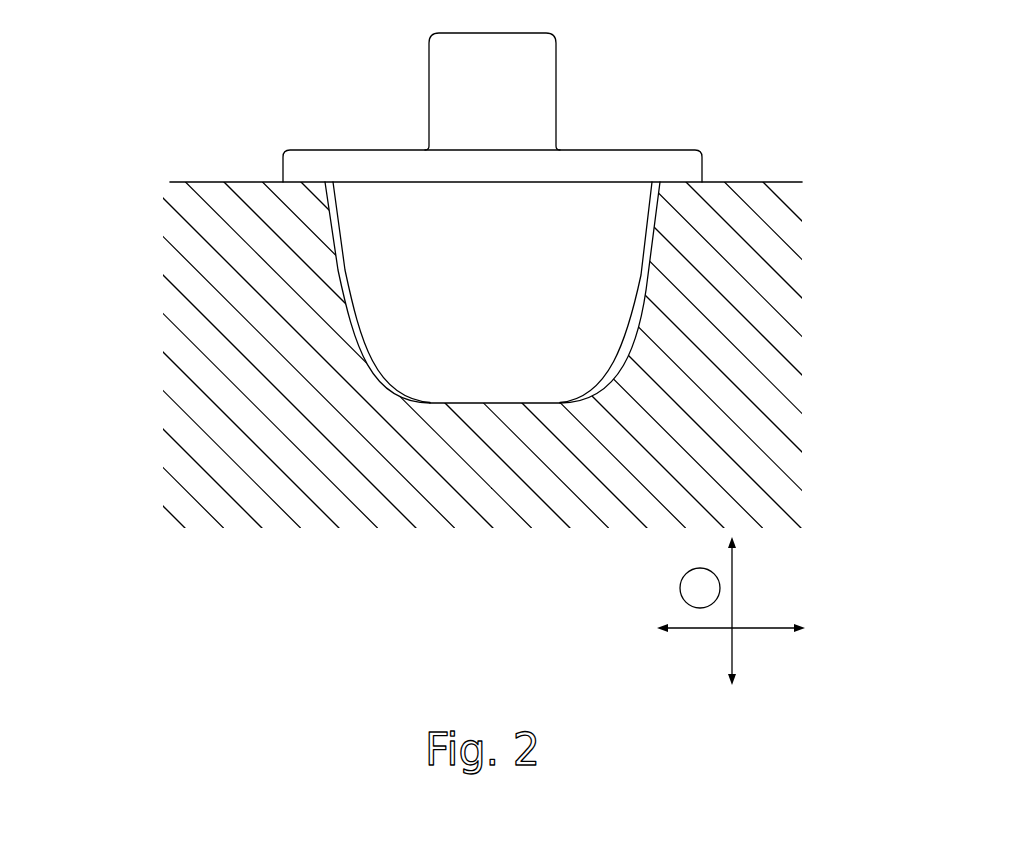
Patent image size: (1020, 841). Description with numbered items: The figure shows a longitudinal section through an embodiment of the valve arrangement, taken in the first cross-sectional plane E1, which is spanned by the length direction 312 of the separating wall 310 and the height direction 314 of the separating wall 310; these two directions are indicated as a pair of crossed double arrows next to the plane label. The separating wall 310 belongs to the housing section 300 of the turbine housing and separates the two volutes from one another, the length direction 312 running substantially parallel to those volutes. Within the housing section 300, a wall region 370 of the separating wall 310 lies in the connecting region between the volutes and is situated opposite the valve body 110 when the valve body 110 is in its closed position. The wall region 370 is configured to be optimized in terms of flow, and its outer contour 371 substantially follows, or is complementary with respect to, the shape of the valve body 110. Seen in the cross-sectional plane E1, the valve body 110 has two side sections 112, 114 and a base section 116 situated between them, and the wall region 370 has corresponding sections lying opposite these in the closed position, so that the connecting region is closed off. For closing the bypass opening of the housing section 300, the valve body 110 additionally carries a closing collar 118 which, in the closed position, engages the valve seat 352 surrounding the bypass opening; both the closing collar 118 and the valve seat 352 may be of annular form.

The valve body 110 is at (467, 106).
The side section 112 is at (342, 290).
The side section 114 is at (651, 254).
The base section 116 is at (492, 404).
The closing collar 118 is at (305, 176).
The housing section 300 is at (510, 302).
The separating wall 310 is at (265, 417).
The length direction 312 is at (704, 630).
The height direction 314 is at (733, 590).
The valve seat 352 is at (303, 173).
The wall region 370 is at (742, 212).
The outer contour 371 is at (619, 371).
The first cross-sectional plane E1 is at (700, 588).